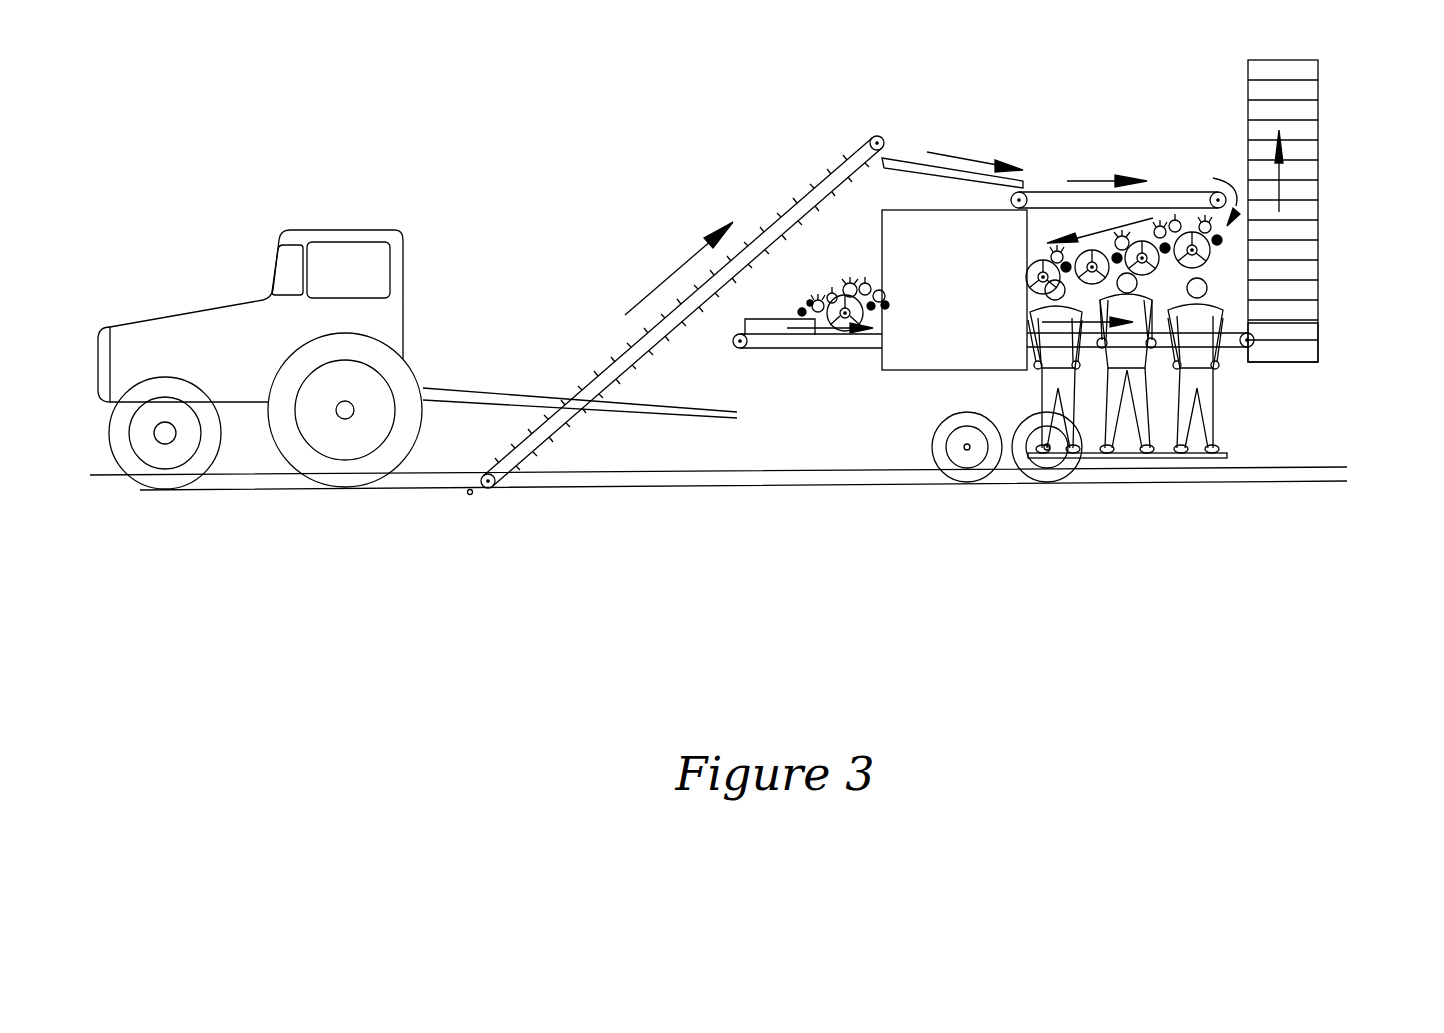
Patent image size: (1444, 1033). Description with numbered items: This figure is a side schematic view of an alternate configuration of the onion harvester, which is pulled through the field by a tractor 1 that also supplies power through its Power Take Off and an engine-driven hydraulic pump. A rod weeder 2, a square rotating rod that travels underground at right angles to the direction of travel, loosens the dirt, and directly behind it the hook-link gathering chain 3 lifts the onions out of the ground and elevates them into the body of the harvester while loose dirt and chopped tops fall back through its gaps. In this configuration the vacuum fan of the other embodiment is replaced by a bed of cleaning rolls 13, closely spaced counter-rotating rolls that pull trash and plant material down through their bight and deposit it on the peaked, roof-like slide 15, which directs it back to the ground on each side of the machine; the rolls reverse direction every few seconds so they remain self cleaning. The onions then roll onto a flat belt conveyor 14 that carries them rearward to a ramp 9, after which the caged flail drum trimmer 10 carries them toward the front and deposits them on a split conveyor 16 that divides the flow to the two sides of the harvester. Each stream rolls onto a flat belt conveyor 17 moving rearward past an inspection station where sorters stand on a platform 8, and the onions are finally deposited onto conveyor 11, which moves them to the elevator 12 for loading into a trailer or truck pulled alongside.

The tractor 1 is at (197, 312).
The rod weeder 2 is at (470, 495).
The gathering chain 3 is at (602, 370).
The platform 8 is at (1228, 456).
The ramp 9 is at (1228, 235).
The caged flail drum trimmer 10 is at (1210, 258).
The conveyor 11 is at (1280, 355).
The elevator 12 is at (1298, 130).
The bed of cleaning rolls 13 is at (922, 165).
The flat belt conveyor 14 is at (1157, 192).
The slide 15 is at (935, 320).
The split conveyor 16 is at (763, 320).
The flat belt conveyor 17 is at (815, 342).